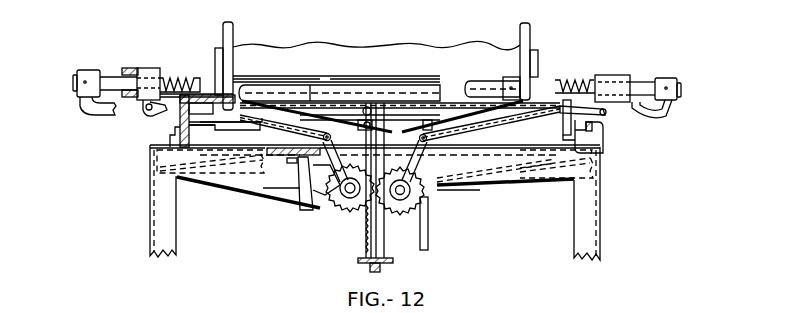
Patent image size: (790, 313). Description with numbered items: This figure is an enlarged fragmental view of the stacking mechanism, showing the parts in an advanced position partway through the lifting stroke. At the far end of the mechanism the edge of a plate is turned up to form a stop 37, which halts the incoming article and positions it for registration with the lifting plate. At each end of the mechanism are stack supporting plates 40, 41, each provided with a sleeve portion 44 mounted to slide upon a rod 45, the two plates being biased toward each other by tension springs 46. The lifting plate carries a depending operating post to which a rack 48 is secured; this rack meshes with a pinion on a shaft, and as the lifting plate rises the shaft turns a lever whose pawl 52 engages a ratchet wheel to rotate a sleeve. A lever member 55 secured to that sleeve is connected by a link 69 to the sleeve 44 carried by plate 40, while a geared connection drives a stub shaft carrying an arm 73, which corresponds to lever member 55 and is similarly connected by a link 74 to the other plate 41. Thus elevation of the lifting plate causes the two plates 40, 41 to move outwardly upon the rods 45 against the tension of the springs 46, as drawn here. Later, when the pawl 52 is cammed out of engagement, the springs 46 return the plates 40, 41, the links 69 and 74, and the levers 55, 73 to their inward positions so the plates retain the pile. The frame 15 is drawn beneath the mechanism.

The frame 15 is at (272, 178).
The stop 37 is at (441, 84).
The plate 40 is at (592, 117).
The plate 41 is at (151, 112).
The sleeve portion 44 is at (152, 71).
The rod 45 is at (112, 80).
The tension spring 46 is at (188, 77).
The rack 48 is at (368, 244).
The pawl 52 is at (311, 212).
The lever member 55 is at (329, 204).
The link 69 is at (292, 135).
The arm 73 is at (430, 203).
The link 74 is at (478, 139).